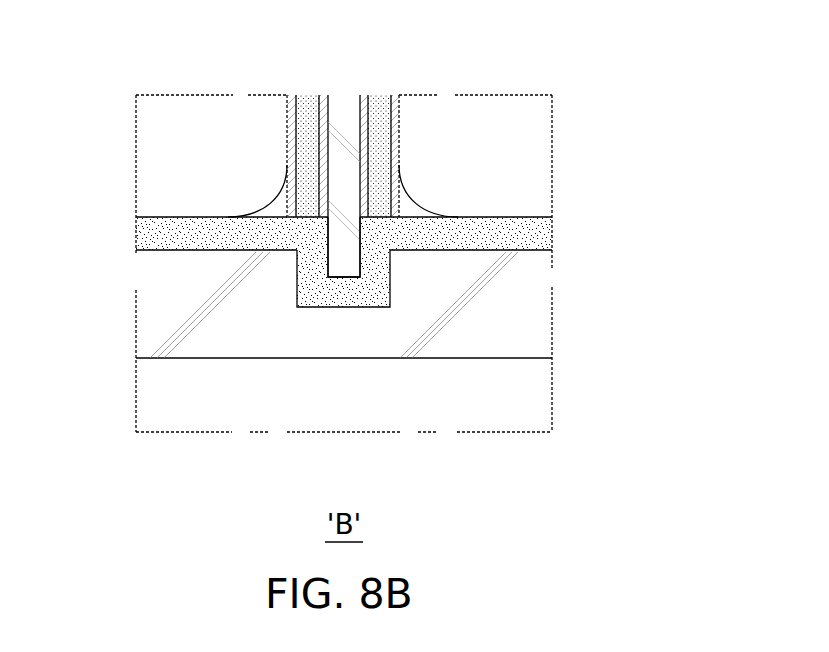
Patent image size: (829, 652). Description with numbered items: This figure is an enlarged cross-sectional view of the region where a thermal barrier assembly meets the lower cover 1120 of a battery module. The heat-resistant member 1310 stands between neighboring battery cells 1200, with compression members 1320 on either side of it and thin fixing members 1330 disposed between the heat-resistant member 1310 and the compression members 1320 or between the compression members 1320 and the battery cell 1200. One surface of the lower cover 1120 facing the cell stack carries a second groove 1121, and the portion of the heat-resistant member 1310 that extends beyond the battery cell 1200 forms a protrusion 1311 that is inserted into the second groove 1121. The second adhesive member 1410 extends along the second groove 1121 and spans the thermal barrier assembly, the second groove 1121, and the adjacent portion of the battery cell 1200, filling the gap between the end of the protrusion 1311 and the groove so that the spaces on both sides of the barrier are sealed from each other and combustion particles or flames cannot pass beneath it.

The battery cell 1200 is at (152, 152).
The second adhesive member 1410 is at (535, 237).
The lower cover 1120 is at (535, 300).
The second groove 1121 is at (349, 291).
The heat-resistant member 1310 is at (343, 105).
The protrusion 1311 is at (352, 260).
The compression member 1320 is at (307, 103).
The fixing member 1330 is at (320, 133).